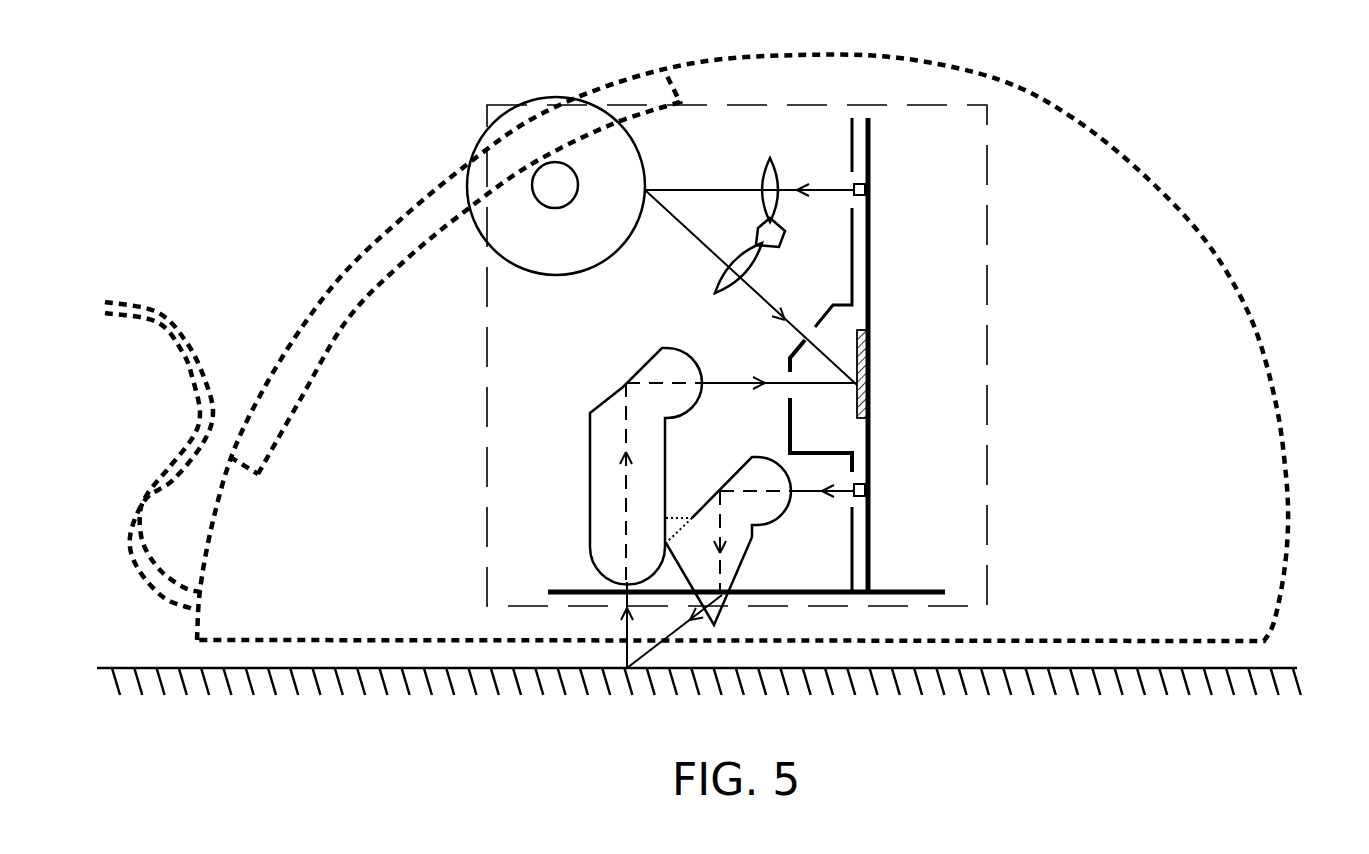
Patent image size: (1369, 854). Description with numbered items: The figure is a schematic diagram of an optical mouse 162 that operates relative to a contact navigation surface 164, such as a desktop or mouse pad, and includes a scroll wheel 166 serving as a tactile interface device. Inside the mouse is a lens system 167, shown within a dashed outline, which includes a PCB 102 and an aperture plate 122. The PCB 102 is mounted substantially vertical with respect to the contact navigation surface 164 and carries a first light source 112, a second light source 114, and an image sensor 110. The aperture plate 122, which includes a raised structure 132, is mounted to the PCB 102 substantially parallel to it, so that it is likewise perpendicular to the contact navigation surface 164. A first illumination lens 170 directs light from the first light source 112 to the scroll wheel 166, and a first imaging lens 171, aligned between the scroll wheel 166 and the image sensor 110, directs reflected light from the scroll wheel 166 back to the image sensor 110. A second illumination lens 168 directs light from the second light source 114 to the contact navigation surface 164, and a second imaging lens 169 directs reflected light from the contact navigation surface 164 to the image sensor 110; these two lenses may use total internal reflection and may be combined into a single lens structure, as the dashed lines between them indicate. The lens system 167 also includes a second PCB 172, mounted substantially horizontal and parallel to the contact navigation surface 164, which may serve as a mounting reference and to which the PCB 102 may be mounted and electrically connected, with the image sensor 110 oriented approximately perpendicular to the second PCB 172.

The PCB 102 is at (871, 150).
The image sensor 110 is at (855, 330).
The first light source 112 is at (854, 186).
The second light source 114 is at (854, 497).
The aperture plate 122 is at (852, 128).
The raised structure 132 is at (790, 352).
The optical mouse 162 is at (1150, 177).
The contact navigation surface 164 is at (1175, 684).
The scroll wheel 166 is at (530, 100).
The lens system 167 is at (988, 358).
The second illumination lens 168 is at (745, 555).
The second imaging lens 169 is at (590, 447).
The first illumination lens 170 is at (765, 168).
The first imaging lens 171 is at (725, 283).
The second PCB 172 is at (918, 590).